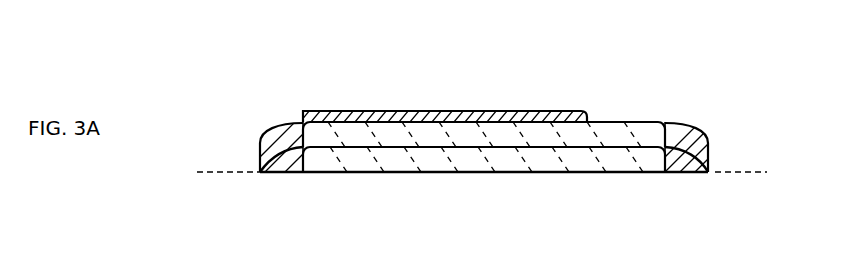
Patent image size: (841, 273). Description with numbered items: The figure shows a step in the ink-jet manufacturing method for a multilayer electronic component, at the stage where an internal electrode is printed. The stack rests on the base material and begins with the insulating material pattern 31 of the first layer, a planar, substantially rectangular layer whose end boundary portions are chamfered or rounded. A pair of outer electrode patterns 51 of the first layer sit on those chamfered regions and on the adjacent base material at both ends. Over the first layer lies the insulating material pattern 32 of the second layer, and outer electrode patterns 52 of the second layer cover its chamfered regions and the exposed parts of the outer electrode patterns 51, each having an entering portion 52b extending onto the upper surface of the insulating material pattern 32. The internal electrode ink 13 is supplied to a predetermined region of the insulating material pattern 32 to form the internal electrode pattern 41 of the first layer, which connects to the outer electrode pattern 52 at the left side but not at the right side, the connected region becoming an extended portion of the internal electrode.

The internal electrode ink 13 is at (497, 111).
The insulating material pattern of the first layer 31 is at (437, 172).
The insulating material pattern of the second layer 32 is at (507, 150).
The internal electrode pattern of the first layer 41 is at (400, 111).
The outer electrode patterns of the first layer 51 is at (277, 172).
The outer electrode patterns of the second layer 52 is at (283, 125).
The entering portion of the outer electrode pattern 52b is at (303, 111).